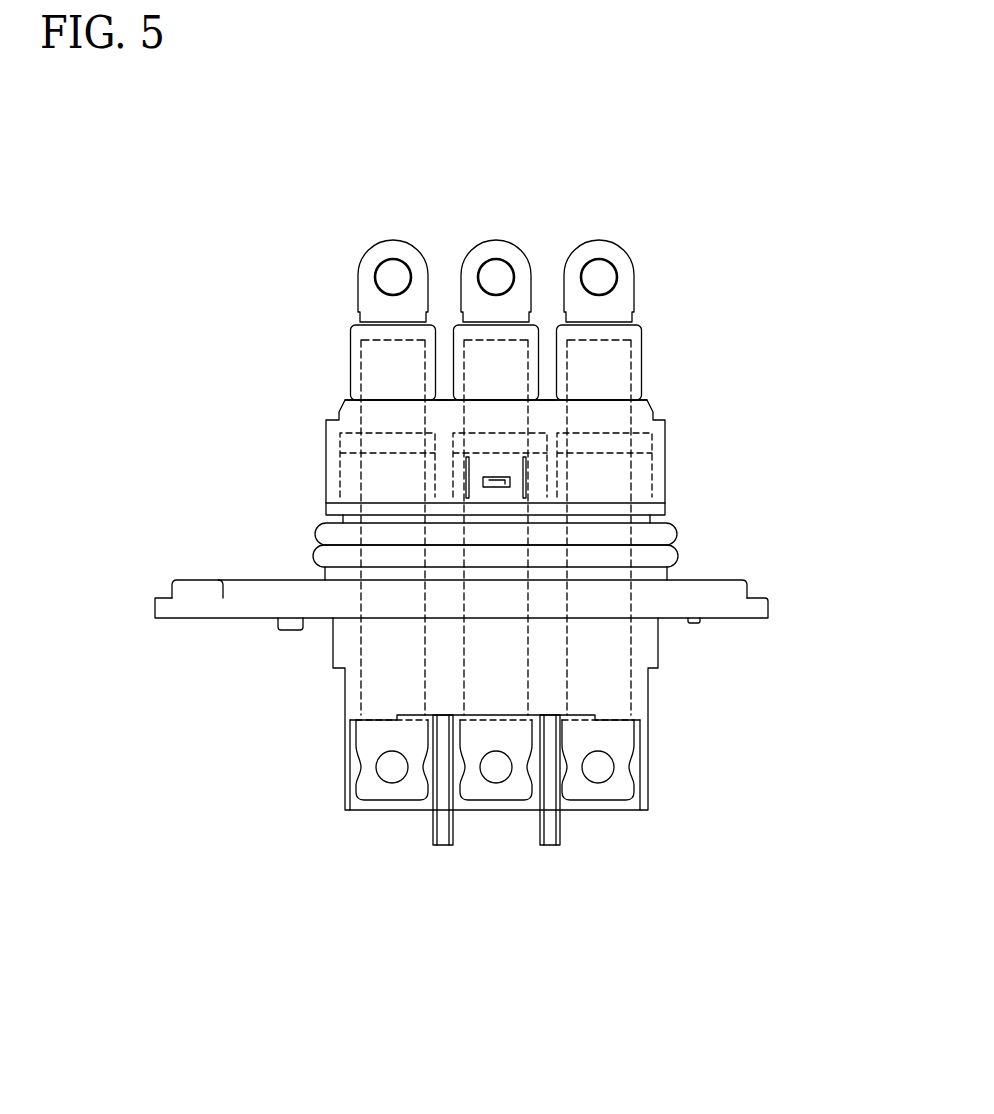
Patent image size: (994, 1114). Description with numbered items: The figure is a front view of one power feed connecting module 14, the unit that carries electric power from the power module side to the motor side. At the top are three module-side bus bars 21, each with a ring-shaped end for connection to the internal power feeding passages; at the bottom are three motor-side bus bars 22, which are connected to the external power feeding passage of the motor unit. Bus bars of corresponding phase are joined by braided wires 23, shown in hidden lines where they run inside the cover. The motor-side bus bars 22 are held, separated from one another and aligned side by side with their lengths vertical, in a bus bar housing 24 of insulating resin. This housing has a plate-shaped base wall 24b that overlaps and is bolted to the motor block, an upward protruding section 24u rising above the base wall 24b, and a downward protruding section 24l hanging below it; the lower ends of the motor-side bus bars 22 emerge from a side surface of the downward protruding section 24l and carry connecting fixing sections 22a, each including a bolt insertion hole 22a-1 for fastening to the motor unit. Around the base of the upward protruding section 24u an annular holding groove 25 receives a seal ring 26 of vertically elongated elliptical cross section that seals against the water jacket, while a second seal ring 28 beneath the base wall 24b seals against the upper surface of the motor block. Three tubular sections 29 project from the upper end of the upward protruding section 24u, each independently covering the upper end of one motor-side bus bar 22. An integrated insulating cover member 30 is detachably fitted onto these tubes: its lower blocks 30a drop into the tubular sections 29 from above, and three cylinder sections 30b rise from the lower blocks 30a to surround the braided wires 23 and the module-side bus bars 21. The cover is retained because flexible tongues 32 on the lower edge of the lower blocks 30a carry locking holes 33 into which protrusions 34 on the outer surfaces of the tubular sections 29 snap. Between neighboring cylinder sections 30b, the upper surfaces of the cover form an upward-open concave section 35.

The power feed connecting module 14 is at (683, 253).
The module-side bus bar 21 is at (393, 243).
The motor-side bus bar 22 is at (412, 788).
The connecting fixing section 22a is at (469, 868).
The bolt insertion hole 22a-1 is at (398, 775).
The braided wire 23 is at (463, 370).
The bus bar housing 24 is at (712, 578).
The upward protruding section 24u is at (323, 573).
The downward protruding section 24l is at (350, 690).
The base wall 24b is at (737, 597).
The holding groove 25 is at (673, 538).
The seal ring 26 is at (643, 528).
The seal ring 28 is at (690, 624).
The tubular section 29 is at (457, 432).
The insulating cover member 30 is at (655, 406).
The lower block 30a is at (326, 468).
The cylinder section 30b is at (352, 327).
The tongue 32 is at (482, 494).
The locking hole 33 is at (510, 487).
The protrusion 34 is at (494, 478).
The concave section 35 is at (437, 352).